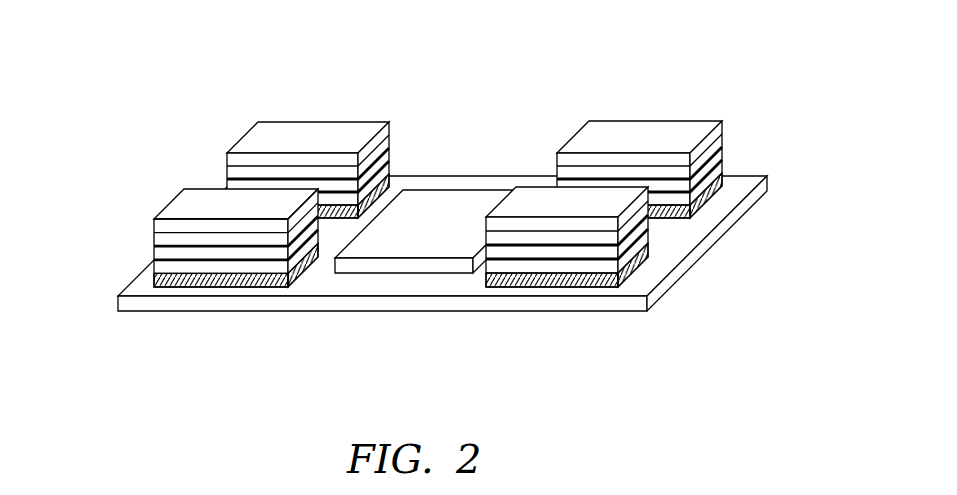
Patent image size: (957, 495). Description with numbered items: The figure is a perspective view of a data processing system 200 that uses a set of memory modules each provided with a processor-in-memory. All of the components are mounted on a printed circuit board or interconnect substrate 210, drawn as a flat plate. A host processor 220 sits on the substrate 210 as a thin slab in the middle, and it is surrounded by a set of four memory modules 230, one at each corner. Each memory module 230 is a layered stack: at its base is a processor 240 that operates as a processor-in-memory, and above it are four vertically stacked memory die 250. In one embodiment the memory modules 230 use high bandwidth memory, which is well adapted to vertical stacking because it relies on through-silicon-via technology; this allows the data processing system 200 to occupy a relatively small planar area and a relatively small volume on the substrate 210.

The data processing system 200 is at (432, 244).
The interconnect substrate 210 is at (537, 313).
The host processor 220 is at (396, 277).
The memory module 230 is at (722, 153).
The processor 240 is at (192, 281).
The memory die 250 is at (147, 238).